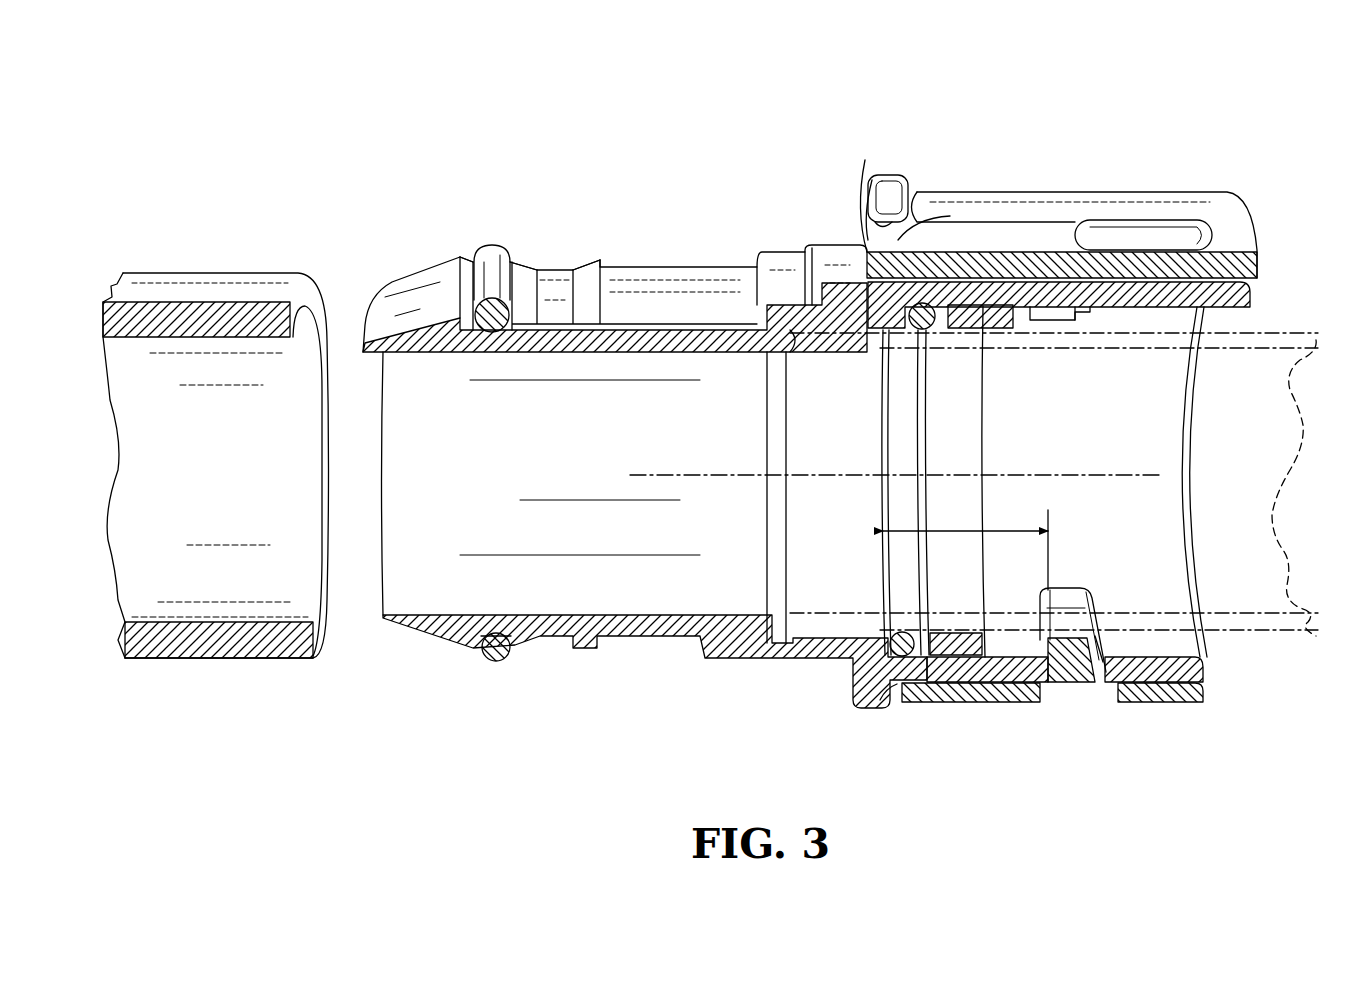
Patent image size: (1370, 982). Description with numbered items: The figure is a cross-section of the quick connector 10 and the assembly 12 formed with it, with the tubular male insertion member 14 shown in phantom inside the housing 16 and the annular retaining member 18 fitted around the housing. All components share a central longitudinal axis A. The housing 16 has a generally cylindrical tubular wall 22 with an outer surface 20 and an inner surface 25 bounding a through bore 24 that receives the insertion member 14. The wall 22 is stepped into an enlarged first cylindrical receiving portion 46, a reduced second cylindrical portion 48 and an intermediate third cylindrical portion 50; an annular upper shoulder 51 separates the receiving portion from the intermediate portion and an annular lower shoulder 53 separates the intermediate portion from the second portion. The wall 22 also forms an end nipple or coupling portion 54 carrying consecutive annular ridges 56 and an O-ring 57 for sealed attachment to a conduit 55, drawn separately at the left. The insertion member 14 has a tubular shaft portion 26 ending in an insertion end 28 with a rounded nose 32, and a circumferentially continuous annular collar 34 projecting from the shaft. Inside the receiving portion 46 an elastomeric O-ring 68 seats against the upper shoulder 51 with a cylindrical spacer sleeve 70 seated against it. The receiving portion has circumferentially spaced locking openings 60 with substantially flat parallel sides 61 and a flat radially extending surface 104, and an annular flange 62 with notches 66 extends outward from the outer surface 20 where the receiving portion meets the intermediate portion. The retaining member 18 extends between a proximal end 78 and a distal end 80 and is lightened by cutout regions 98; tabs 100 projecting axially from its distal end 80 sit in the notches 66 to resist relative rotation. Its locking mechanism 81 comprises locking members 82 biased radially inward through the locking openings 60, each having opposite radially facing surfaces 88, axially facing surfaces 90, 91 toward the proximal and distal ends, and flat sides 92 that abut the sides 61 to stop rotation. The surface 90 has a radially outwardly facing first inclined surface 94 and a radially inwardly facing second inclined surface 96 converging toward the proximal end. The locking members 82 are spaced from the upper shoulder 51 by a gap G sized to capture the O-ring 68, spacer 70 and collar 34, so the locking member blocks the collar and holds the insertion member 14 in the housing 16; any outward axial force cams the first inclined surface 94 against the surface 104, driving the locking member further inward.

The quick connector 10 is at (1242, 160).
The assembly 12 is at (1042, 115).
The tubular male insertion member 14 is at (1270, 330).
The housing 16 is at (713, 656).
The retaining member 18 is at (1272, 262).
The outer surface 20 is at (1005, 262).
The tubular wall 22 is at (865, 297).
The through bore 24 is at (545, 446).
The inner surface 25 is at (665, 612).
The tubular shaft portion 26 is at (1242, 630).
The insertion end 28 is at (782, 540).
The rounded nose 32 is at (770, 658).
The annular collar 34 is at (1062, 270).
The first cylindrical receiving portion 46 is at (1238, 272).
The second cylindrical portion 48 is at (668, 267).
The third cylindrical portion 50 is at (848, 317).
The annular upper shoulder 51 is at (925, 333).
The annular lower shoulder 53 is at (800, 340).
The coupling portion 54 is at (480, 672).
The conduit 55 is at (222, 278).
The annular ridges 56 is at (462, 262).
The O-ring 57 is at (490, 250).
The locking openings 60 is at (1097, 640).
The flat sides 61 is at (1080, 600).
The annular flange 62 is at (886, 180).
The notches 66 is at (862, 192).
The O-ring 68 is at (856, 672).
The spacer sleeve 70 is at (930, 690).
The proximal end 78 is at (1208, 690).
The distal end 80 is at (880, 702).
The locking mechanism 81 is at (1050, 352).
The locking members 82 is at (1100, 320).
The radially facing surfaces 88 is at (1086, 325).
The axially facing surface 90 is at (1094, 640).
The axially facing surface 91 is at (1013, 683).
The opposite sides 92 is at (1100, 307).
The first inclined surface 94 is at (1092, 700).
The second inclined surface 96 is at (1092, 625).
The cutout regions 98 is at (1143, 228).
The tabs 100 is at (905, 238).
The radially extending surface 104 is at (1104, 700).
The central longitudinal axis A is at (708, 474).
The gap G is at (965, 550).